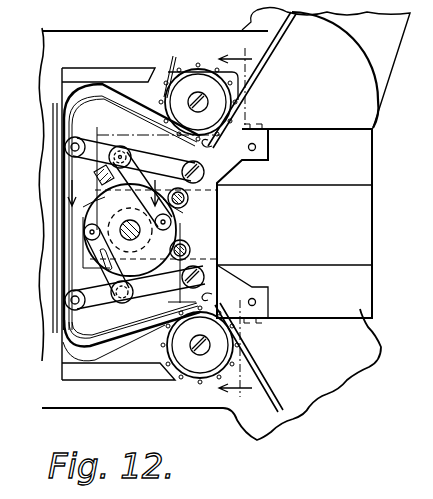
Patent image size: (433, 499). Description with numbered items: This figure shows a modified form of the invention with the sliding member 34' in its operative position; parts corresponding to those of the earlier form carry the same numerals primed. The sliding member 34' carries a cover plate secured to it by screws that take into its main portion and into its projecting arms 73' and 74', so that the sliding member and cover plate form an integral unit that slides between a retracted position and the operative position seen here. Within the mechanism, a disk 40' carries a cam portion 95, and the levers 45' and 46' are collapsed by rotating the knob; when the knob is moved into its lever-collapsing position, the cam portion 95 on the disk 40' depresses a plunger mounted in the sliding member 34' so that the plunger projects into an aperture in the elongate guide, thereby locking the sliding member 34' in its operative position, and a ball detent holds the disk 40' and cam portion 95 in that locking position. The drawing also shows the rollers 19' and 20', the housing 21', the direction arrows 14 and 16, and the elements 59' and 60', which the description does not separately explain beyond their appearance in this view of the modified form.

The direction arrows / arm 14 is at (135, 172).
The web feed direction arrow 16 is at (241, 225).
The upper feed roller 19' is at (198, 74).
The lower feed roller 20' is at (200, 368).
The housing 21' is at (393, 224).
The sliding member 34' is at (219, 221).
The disk 40' is at (130, 230).
The lever 45' is at (118, 167).
The lever 46' is at (135, 280).
The link 59' is at (212, 203).
The cam hub 60' is at (137, 224).
The projecting arm 73' is at (280, 147).
The projecting arm 74' is at (278, 301).
The cam portion 95 is at (83, 207).